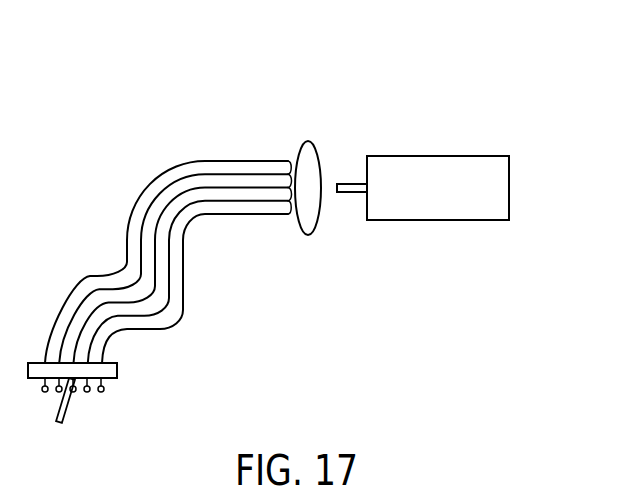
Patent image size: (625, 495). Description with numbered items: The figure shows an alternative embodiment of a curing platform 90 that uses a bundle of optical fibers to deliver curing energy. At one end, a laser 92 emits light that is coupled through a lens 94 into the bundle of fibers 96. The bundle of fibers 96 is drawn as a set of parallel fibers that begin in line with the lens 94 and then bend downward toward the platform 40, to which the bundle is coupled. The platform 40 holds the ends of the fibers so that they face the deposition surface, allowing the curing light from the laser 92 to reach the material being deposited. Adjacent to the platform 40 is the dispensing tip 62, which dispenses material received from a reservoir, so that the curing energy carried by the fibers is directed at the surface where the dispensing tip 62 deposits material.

The curing platform 90 is at (507, 82).
The laser 92 is at (509, 156).
The lens 94 is at (307, 143).
The bundle of fibers 96 is at (222, 160).
The platform 40 is at (117, 364).
The dispensing tip 62 is at (68, 395).